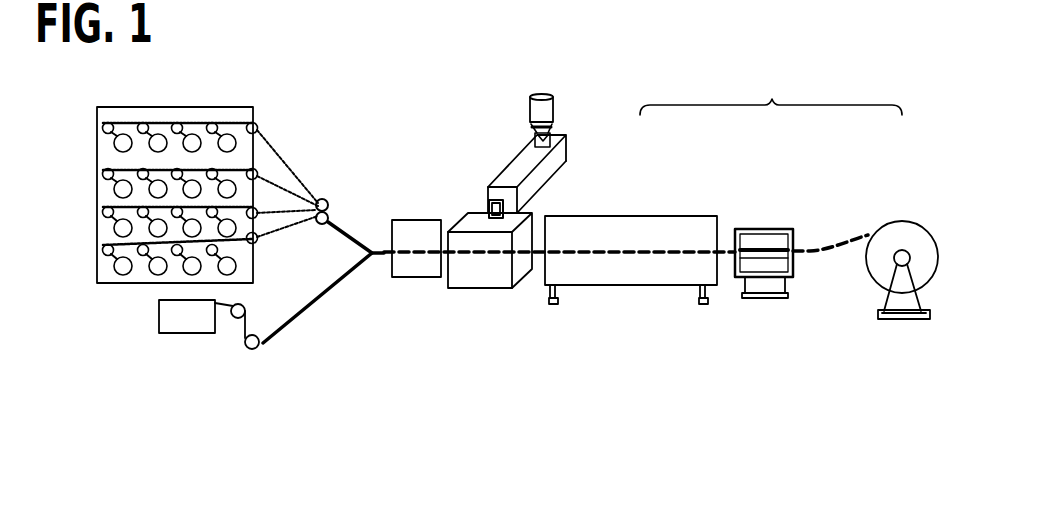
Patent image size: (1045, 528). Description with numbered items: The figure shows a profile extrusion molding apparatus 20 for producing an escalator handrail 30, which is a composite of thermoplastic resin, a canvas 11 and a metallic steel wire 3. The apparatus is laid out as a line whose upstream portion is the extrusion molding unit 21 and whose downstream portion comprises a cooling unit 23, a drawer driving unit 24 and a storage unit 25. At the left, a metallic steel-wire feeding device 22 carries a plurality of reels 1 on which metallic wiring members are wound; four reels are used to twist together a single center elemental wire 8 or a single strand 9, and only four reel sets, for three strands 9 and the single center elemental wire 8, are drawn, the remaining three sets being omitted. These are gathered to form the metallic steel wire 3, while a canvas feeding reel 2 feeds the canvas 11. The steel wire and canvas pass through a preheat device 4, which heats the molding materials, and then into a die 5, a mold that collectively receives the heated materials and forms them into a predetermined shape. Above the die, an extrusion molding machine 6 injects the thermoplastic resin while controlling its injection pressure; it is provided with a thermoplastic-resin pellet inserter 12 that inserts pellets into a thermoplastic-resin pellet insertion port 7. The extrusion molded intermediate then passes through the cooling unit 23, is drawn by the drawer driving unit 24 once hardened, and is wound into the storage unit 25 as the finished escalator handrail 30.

The reels 1 is at (123, 275).
The canvas feeding reel 2 is at (182, 333).
The metallic steel wire 3 is at (343, 223).
The preheat device 4 is at (412, 277).
The die 5 is at (487, 288).
The extrusion molding machine 6 is at (517, 152).
The thermoplastic-resin pellet insertion port 7 is at (560, 133).
The center elemental wire 8 is at (118, 205).
The strands 9 is at (267, 132).
The canvas 11 is at (288, 327).
The thermoplastic-resin pellet inserter 12 is at (532, 93).
The profile extrusion molding apparatus 20 is at (792, 78).
The extrusion molding unit 21 is at (552, 178).
The metallic steel-wire feeding device 22 is at (173, 107).
The cooling unit 23 is at (683, 215).
The drawer driving unit 24 is at (765, 229).
The storage unit 25 is at (920, 227).
The escalator handrail 30 is at (838, 248).